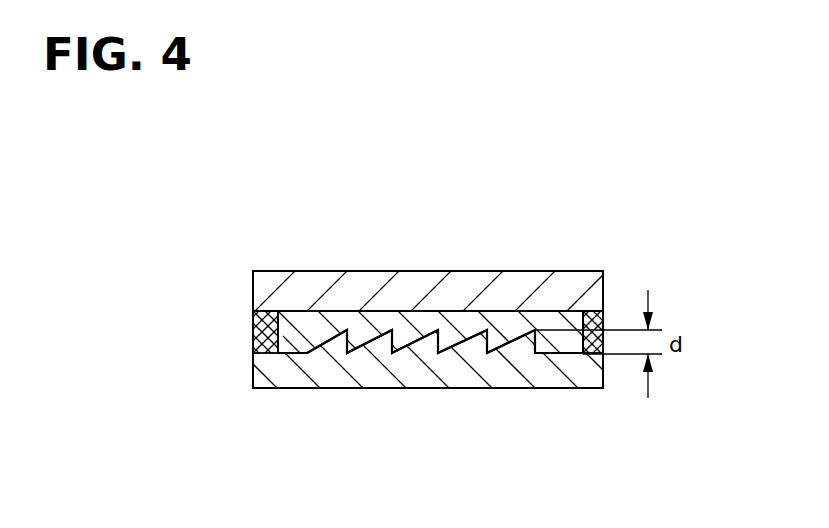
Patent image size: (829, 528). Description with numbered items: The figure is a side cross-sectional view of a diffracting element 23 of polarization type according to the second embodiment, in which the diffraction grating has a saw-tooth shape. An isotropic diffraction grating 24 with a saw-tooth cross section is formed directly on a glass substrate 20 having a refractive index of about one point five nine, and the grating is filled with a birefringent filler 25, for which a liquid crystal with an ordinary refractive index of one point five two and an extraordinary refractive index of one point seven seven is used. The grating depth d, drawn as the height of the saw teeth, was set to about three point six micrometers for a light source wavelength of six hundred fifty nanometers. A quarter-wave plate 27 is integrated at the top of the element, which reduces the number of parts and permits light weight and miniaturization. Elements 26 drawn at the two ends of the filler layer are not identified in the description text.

The glass substrate 20 is at (270, 375).
The diffracting element 23 is at (458, 264).
The isotropic diffraction grating 24 is at (503, 328).
The birefringent filler 25 is at (409, 328).
The seal members 26 is at (262, 318).
The quarter-wave plate 27 is at (295, 294).